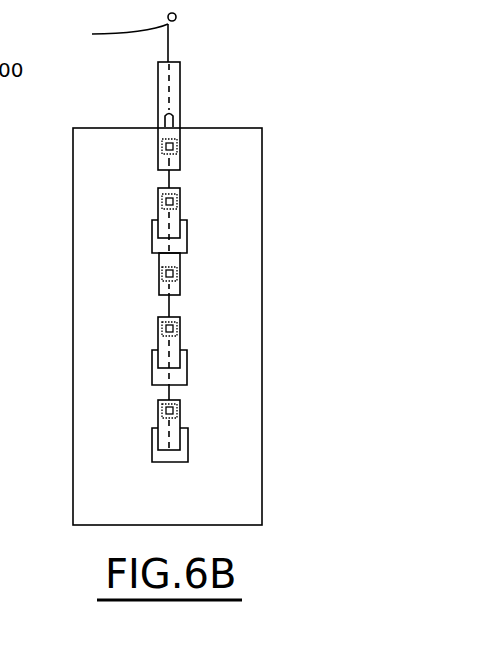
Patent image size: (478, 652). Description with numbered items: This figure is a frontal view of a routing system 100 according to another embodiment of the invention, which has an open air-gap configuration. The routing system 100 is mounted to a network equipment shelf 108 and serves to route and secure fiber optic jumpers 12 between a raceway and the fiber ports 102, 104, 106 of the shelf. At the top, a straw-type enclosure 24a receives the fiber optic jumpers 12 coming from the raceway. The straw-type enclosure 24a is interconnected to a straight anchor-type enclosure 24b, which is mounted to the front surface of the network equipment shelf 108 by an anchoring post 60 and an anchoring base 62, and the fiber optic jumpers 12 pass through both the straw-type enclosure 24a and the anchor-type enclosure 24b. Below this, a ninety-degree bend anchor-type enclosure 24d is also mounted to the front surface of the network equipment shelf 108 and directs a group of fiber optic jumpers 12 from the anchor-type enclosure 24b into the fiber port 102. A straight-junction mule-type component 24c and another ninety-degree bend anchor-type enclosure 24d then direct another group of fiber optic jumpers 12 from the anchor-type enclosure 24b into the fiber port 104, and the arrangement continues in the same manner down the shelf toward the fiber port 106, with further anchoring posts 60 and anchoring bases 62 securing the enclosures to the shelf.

The fiber optic jumpers 12 is at (122, 33).
The straw-type enclosure 24a is at (180, 72).
The straight anchor-type enclosure 24b is at (157, 130).
The straight-junction mule-type component 24c is at (160, 277).
The 90° bend anchor-type enclosure 24d is at (160, 200).
The anchoring post 60 is at (180, 149).
The anchoring base 62 is at (180, 143).
The routing system 100 is at (283, 85).
The fiber port 102 is at (150, 240).
The fiber port 104 is at (148, 367).
The fiber port 106 is at (150, 445).
The network equipment shelf 108 is at (265, 135).